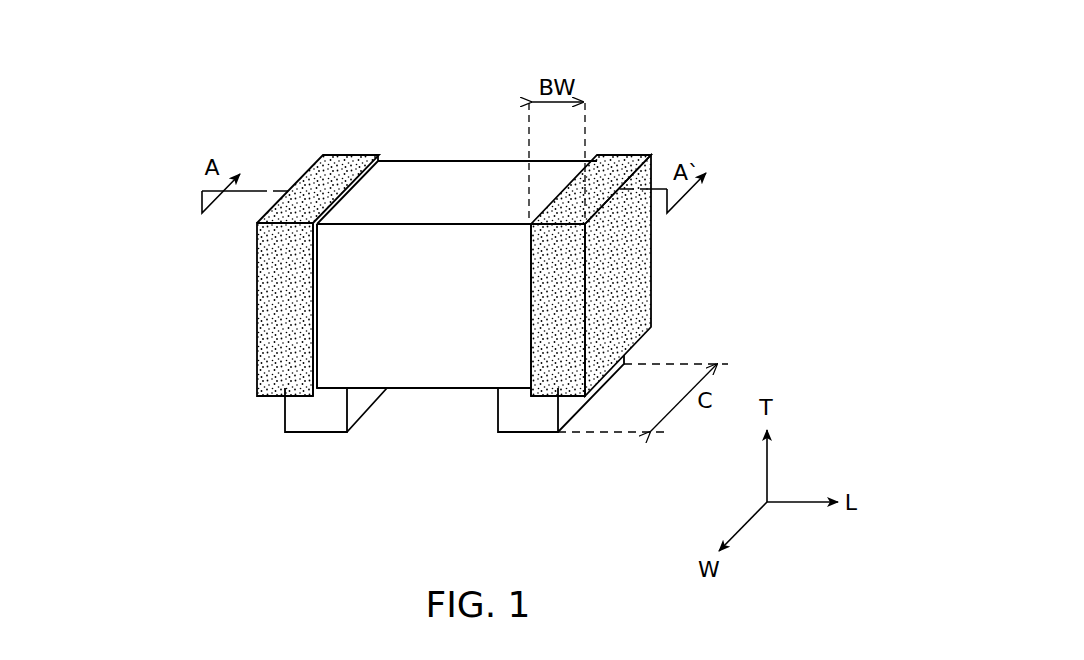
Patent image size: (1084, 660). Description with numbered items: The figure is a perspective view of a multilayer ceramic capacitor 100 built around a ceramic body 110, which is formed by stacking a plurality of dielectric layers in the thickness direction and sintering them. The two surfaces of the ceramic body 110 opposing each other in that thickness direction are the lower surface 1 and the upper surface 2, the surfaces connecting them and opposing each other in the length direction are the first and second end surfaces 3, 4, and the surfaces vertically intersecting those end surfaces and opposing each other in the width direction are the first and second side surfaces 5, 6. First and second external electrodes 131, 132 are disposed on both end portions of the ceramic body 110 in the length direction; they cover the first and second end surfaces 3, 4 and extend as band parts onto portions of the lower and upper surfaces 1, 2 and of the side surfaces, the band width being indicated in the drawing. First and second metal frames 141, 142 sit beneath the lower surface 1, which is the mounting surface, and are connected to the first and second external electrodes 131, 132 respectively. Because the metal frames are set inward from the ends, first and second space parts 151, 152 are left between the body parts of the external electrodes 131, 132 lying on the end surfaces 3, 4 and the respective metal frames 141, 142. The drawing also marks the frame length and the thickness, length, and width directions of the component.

The multilayer ceramic capacitor 100 is at (263, 67).
The ceramic body 110 is at (447, 180).
The lower surface 1 is at (452, 352).
The upper surface 2 is at (417, 185).
The first end surface 3 is at (283, 302).
The second end surface 4 is at (622, 263).
The first side surface 5 is at (403, 327).
The second side surface 6 is at (467, 191).
The first external electrode 131 is at (347, 165).
The second external electrode 132 is at (622, 165).
The first metal frame 141 is at (303, 418).
The second metal frame 142 is at (525, 418).
The first space part 151 is at (277, 404).
The second space part 152 is at (593, 403).